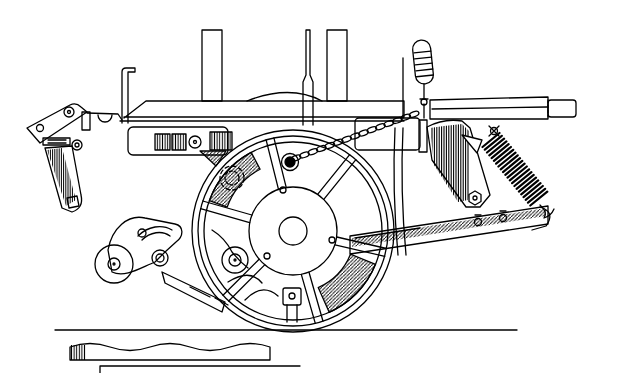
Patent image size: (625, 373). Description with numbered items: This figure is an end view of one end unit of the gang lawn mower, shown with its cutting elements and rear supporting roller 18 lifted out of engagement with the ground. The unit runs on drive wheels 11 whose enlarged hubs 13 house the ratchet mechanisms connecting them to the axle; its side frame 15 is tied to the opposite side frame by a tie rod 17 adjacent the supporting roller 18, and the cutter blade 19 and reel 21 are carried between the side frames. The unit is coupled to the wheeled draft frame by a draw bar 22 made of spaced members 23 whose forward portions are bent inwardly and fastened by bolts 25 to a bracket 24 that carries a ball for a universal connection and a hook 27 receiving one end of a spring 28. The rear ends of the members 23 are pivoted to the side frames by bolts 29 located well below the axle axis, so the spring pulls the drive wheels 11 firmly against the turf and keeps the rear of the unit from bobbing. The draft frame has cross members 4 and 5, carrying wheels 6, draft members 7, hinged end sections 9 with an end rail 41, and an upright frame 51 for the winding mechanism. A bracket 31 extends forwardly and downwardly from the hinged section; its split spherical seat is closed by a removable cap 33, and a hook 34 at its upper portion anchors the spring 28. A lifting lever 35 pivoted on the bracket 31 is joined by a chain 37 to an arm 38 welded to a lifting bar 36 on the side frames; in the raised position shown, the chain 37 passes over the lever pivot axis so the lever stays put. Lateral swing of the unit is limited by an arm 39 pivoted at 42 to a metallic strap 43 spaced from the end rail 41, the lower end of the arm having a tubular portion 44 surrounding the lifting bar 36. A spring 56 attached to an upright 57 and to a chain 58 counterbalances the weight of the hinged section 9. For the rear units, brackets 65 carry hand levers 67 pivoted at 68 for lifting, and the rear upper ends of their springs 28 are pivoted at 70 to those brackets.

The cross member 4 is at (216, 119).
The cross member 5 is at (183, 104).
The carrying wheel 6 is at (400, 185).
The draft member 7 is at (500, 98).
The hinged end section 9 is at (425, 154).
The drive wheel 11 is at (200, 282).
The enlarged hub 13 is at (316, 219).
The side frame 15 is at (167, 266).
The tie rod 17 is at (163, 252).
The supporting roller 18 is at (104, 273).
The cutter blade 19 is at (188, 294).
The reel 21 is at (218, 305).
The draw bar 22 is at (444, 251).
The spaced apart member 23 is at (414, 250).
The bracket 24 is at (537, 223).
The bolt 25 is at (503, 224).
The hook 27 is at (549, 206).
The spring 28 is at (525, 166).
The pivot 29 is at (293, 300).
The bracket 31 is at (455, 172).
The removable cap 33 is at (484, 198).
The hook 34 is at (500, 131).
The lifting lever 35 is at (561, 104).
The lifting bar 36 is at (284, 193).
The chain 37 is at (376, 136).
The arm 38 is at (300, 162).
The arm 39 is at (180, 158).
The end rail 41 is at (146, 153).
The pivot 42 is at (198, 136).
The metallic strap 43 is at (243, 126).
The tubular portion 44 is at (220, 184).
The upright frame 51 is at (338, 54).
The spring 56 is at (432, 58).
The upright 57 is at (402, 77).
The chain 58 is at (428, 90).
The bracket 65 is at (56, 163).
The hand lever 67 is at (51, 120).
The pivotal connection 68 is at (70, 107).
The pivotal connection 70 is at (80, 151).